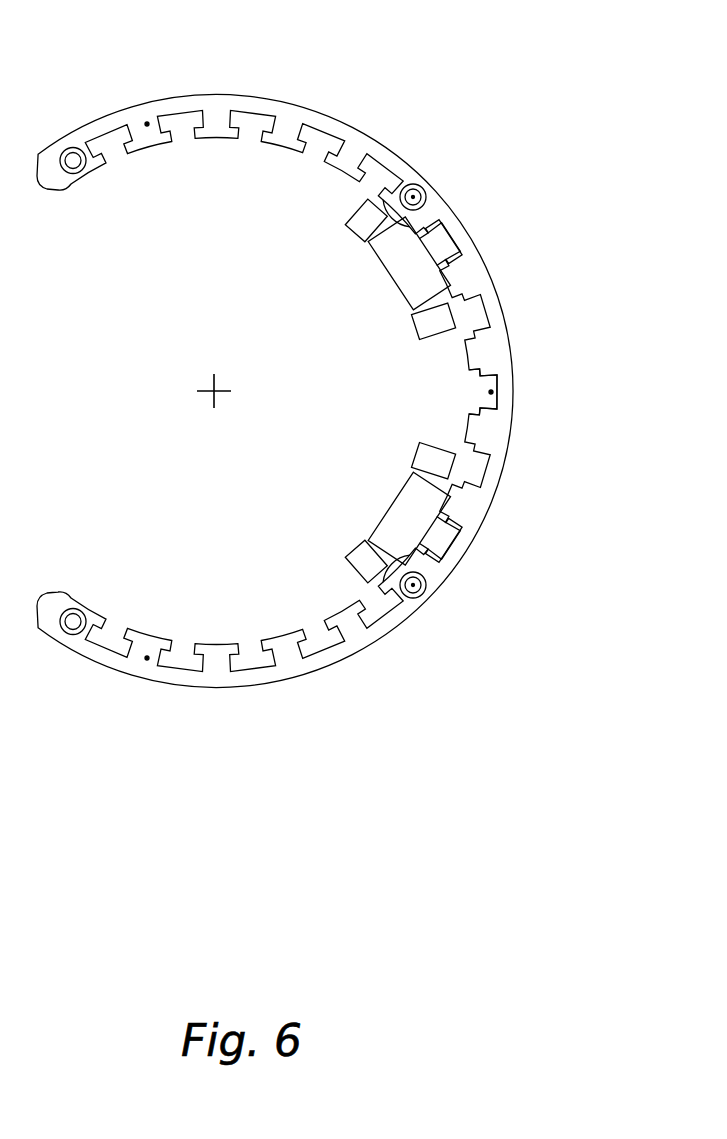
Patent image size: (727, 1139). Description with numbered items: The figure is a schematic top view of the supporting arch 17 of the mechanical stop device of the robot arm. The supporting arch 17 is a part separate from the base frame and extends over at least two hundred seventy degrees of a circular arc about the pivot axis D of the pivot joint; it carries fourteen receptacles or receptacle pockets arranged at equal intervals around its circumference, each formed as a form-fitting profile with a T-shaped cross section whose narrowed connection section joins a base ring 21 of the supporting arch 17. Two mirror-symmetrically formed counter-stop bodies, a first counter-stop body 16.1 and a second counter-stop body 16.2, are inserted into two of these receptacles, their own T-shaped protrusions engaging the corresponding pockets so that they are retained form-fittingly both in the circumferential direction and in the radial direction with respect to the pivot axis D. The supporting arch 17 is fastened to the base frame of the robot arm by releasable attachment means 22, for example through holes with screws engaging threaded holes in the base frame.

The first counter-stop body 16.1 is at (397, 262).
The second counter-stop body 16.2 is at (399, 507).
The supporting arch 17 is at (269, 689).
The base ring 21 is at (508, 418).
The releasable attachment means 22 is at (71, 158).
The pivot axis D is at (215, 396).